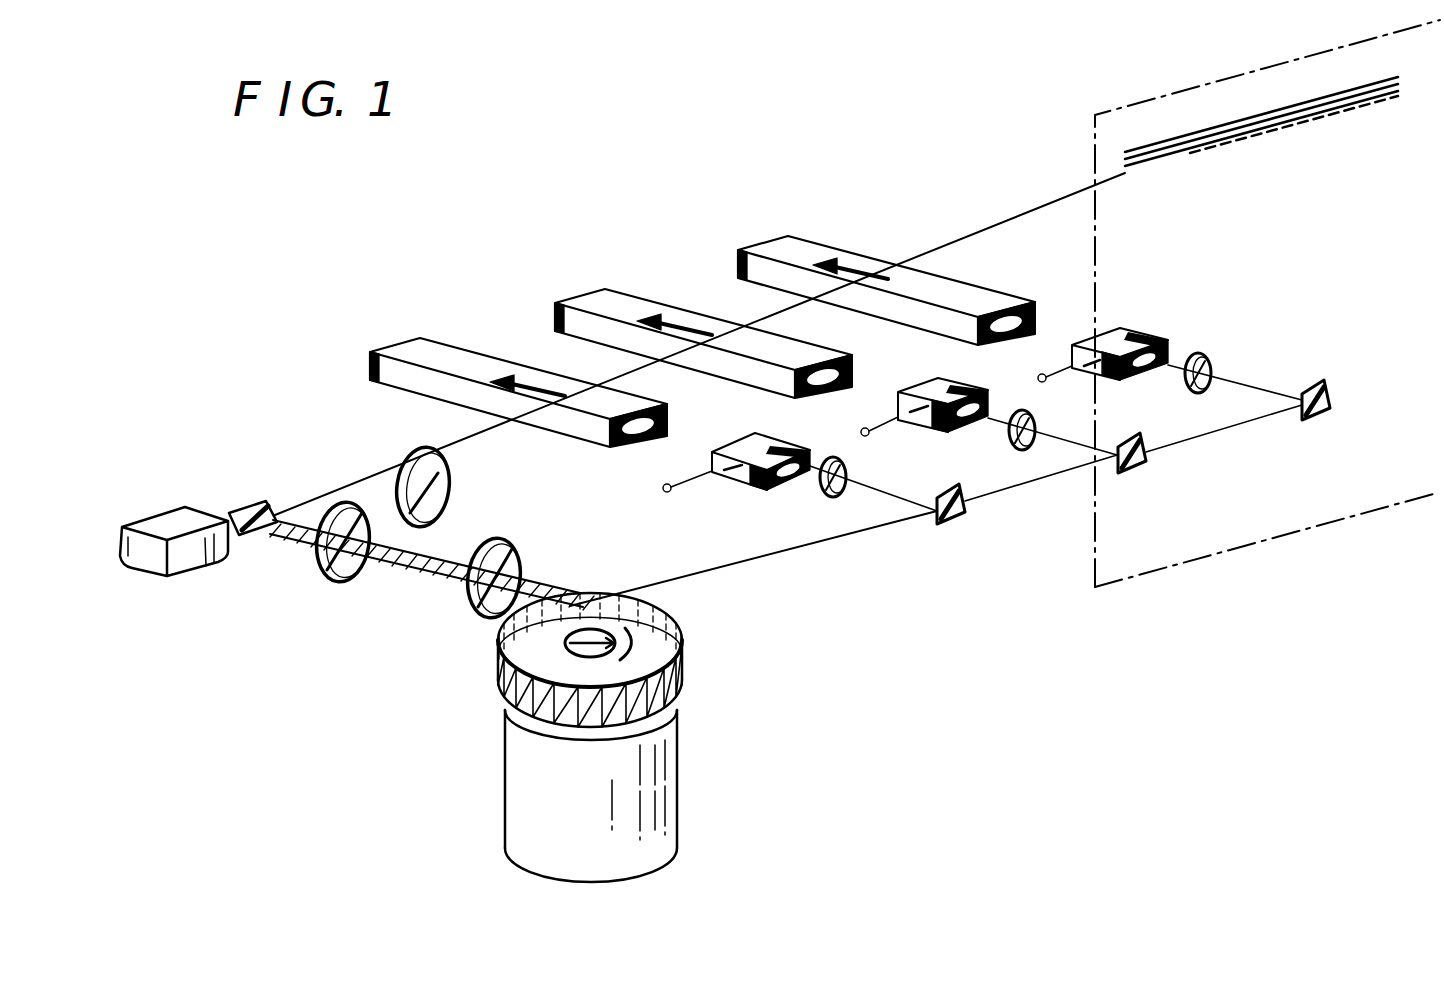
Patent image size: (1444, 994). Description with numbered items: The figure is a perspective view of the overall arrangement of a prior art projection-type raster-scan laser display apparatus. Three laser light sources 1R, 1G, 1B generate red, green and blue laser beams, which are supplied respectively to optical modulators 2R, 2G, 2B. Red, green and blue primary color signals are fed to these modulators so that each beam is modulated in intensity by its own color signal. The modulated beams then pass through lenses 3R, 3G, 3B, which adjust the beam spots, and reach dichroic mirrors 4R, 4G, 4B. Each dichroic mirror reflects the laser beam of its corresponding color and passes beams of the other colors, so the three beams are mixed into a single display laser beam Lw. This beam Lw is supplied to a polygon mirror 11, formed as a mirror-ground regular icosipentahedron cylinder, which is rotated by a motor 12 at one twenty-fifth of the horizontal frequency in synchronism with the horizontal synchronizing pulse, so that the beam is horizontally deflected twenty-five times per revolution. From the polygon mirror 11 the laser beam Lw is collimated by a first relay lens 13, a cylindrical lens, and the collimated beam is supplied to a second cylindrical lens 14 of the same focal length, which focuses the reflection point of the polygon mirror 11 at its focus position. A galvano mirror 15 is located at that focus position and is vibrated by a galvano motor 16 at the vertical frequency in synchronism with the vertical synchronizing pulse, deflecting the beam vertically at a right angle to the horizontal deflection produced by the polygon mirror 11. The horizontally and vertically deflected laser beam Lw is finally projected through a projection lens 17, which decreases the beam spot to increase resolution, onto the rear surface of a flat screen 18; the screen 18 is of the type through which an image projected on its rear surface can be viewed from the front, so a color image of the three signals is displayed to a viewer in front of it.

The laser light source 1R is at (416, 351).
The laser light source 1G is at (601, 302).
The laser light source 1B is at (781, 250).
The optical modulator 2R is at (742, 448).
The optical modulator 2G is at (926, 392).
The optical modulator 2B is at (1134, 330).
The lens 3R is at (832, 498).
The lens 3G is at (1020, 450).
The lens 3B is at (1210, 355).
The dichroic mirror 4R is at (960, 526).
The dichroic mirror 4G is at (1146, 461).
The dichroic mirror 4B is at (1328, 384).
The polygon mirror 11 is at (500, 698).
The motor 12 is at (518, 815).
The first relay lens 13 is at (520, 553).
The second cylindrical lens 14 is at (338, 578).
The galvano mirror 15 is at (257, 500).
The galvano motor 16 is at (172, 520).
The projection lens 17 is at (400, 460).
The screen 18 is at (1344, 522).
The display laser beam Lw is at (976, 234).